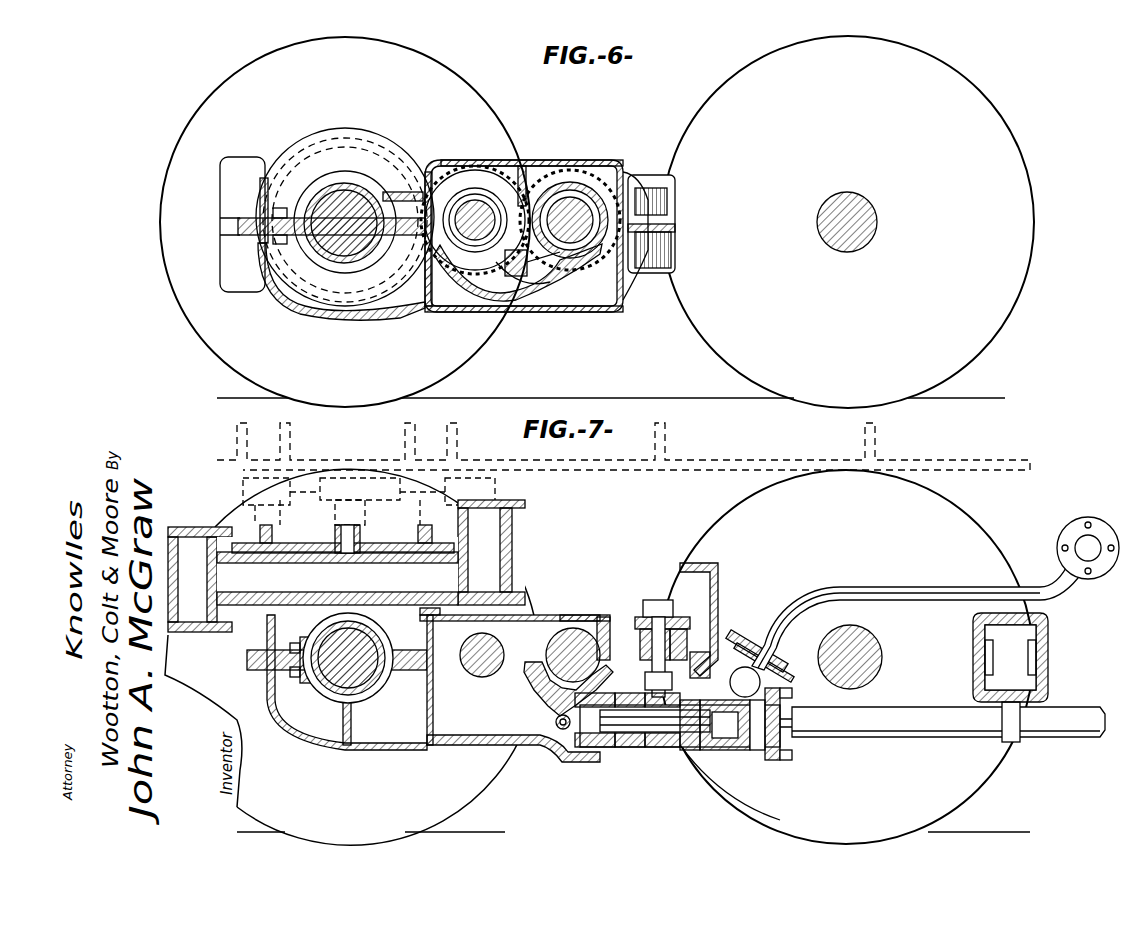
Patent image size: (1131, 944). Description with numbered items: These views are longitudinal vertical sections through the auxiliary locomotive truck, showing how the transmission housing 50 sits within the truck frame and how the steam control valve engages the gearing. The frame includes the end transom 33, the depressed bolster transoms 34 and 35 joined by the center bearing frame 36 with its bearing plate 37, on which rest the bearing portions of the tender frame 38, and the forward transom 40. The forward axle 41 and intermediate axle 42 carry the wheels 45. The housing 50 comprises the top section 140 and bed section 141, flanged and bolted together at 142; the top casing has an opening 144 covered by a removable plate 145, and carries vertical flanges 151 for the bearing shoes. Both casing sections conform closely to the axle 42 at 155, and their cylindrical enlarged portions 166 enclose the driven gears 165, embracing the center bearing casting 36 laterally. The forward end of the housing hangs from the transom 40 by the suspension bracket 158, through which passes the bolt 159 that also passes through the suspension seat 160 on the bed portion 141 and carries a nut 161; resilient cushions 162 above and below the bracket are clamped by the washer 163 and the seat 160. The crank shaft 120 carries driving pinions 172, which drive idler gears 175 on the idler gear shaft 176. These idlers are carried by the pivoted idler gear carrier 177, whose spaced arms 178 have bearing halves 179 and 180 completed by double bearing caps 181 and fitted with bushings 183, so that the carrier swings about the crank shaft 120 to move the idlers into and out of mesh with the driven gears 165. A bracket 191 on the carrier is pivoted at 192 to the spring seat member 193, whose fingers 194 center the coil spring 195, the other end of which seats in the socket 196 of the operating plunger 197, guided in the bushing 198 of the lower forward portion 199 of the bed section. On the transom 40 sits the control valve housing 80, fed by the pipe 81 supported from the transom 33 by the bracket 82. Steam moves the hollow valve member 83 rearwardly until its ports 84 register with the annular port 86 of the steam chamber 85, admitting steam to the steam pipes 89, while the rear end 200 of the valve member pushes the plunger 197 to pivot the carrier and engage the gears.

In FIG. 7, the transverse end beam or transom 33 is at (1048, 630).
In FIG. 7, the bolster transom 34 is at (190, 527).
In FIG. 7, the bolster transom 35 is at (512, 530).
In FIG. 7, the center bearing frame 36 is at (470, 558).
In FIG. 7, the bearing plate 37 is at (308, 553).
In FIG. 7, the locomotive tender frame 38 is at (240, 490).
In FIG. 7, the transom 40 is at (720, 584).
In FIG. 6, the forward axle 41 is at (862, 207).
In FIG. 7, the forward axle 41 is at (884, 660).
In FIG. 6, the intermediate axle 42 is at (342, 262).
In FIG. 7, the intermediate axle 42 is at (364, 684).
In FIG. 6, the wheels 45 is at (178, 282).
In FIG. 7, the wheels 45 is at (450, 790).
In FIG. 6, the transmission housing 50 is at (440, 164).
In FIG. 7, the transmission housing 50 is at (436, 742).
In FIG. 7, the control valve housing 80 is at (730, 782).
In FIG. 7, the pipe 81 is at (900, 730).
In FIG. 7, the bracket 82 is at (1018, 742).
In FIG. 7, the valve member or piston 83 is at (752, 740).
In FIG. 7, the ports 84 is at (840, 720).
In FIG. 7, the steam chamber 85 is at (778, 658).
In FIG. 7, the annular port 86 is at (770, 762).
In FIG. 7, the steam pipes 89 is at (914, 588).
In FIG. 6, the driving crank shaft 120 is at (576, 200).
In FIG. 7, the driving crank shaft 120 is at (560, 650).
In FIG. 6, the top section of housing 140 is at (503, 160).
In FIG. 7, the top section of housing 140 is at (433, 636).
In FIG. 6, the bottom or bed section of housing 141 is at (456, 312).
In FIG. 7, the bottom or bed section of housing 141 is at (388, 752).
In FIG. 6, the flange bolting 142 is at (268, 250).
In FIG. 7, the flange bolting 142 is at (300, 648).
In FIG. 7, the opening 144 is at (600, 617).
In FIG. 7, the removable plate 145 is at (560, 615).
In FIG. 6, the vertical flanges 151 is at (234, 165).
In FIG. 6, the axle-conforming casing portion 155 is at (336, 190).
In FIG. 7, the axle-conforming casing portion 155 is at (330, 688).
In FIG. 7, the suspension bracket 158 is at (720, 626).
In FIG. 7, the bolt 159 is at (682, 636).
In FIG. 7, the suspension seat 160 is at (736, 686).
In FIG. 7, the nut 161 is at (645, 681).
In FIG. 7, the resilient cushions 162 is at (638, 640).
In FIG. 7, the washer 163 is at (656, 600).
In FIG. 6, the driven gears 165 is at (342, 145).
In FIG. 6, the cylindrical enlarged portions of housing 166 is at (332, 322).
In FIG. 6, the driving pinions 172 is at (592, 190).
In FIG. 6, the idler gears 175 is at (468, 170).
In FIG. 6, the idler gear shaft 176 is at (472, 244).
In FIG. 7, the idler gear shaft 176 is at (478, 678).
In FIG. 6, the idler gear carrier 177 is at (512, 282).
In FIG. 7, the idler gear carrier 177 is at (526, 690).
In FIG. 6, the carrier arms 178 is at (536, 278).
In FIG. 6, the bearing half 179 is at (424, 282).
In FIG. 6, the bearing half 180 is at (582, 266).
In FIG. 6, the double bearing cap 181 is at (521, 175).
In FIG. 6, the bushings 183 is at (626, 186).
In FIG. 7, the bracket 191 is at (552, 724).
In FIG. 7, the pivotal connection 192 is at (546, 744).
In FIG. 6, the spring seat member 193 is at (475, 213).
In FIG. 7, the spring seat member 193 is at (578, 740).
In FIG. 7, the projecting fingers 194 is at (592, 748).
In FIG. 7, the coil spring 195 is at (606, 745).
In FIG. 7, the socket 196 is at (628, 748).
In FIG. 7, the idler gear operating plunger 197 is at (655, 748).
In FIG. 7, the bearing or bushing 198 is at (640, 740).
In FIG. 7, the lower forward portion of bed 199 is at (690, 750).
In FIG. 7, the rear end of valve member 200 is at (704, 750).